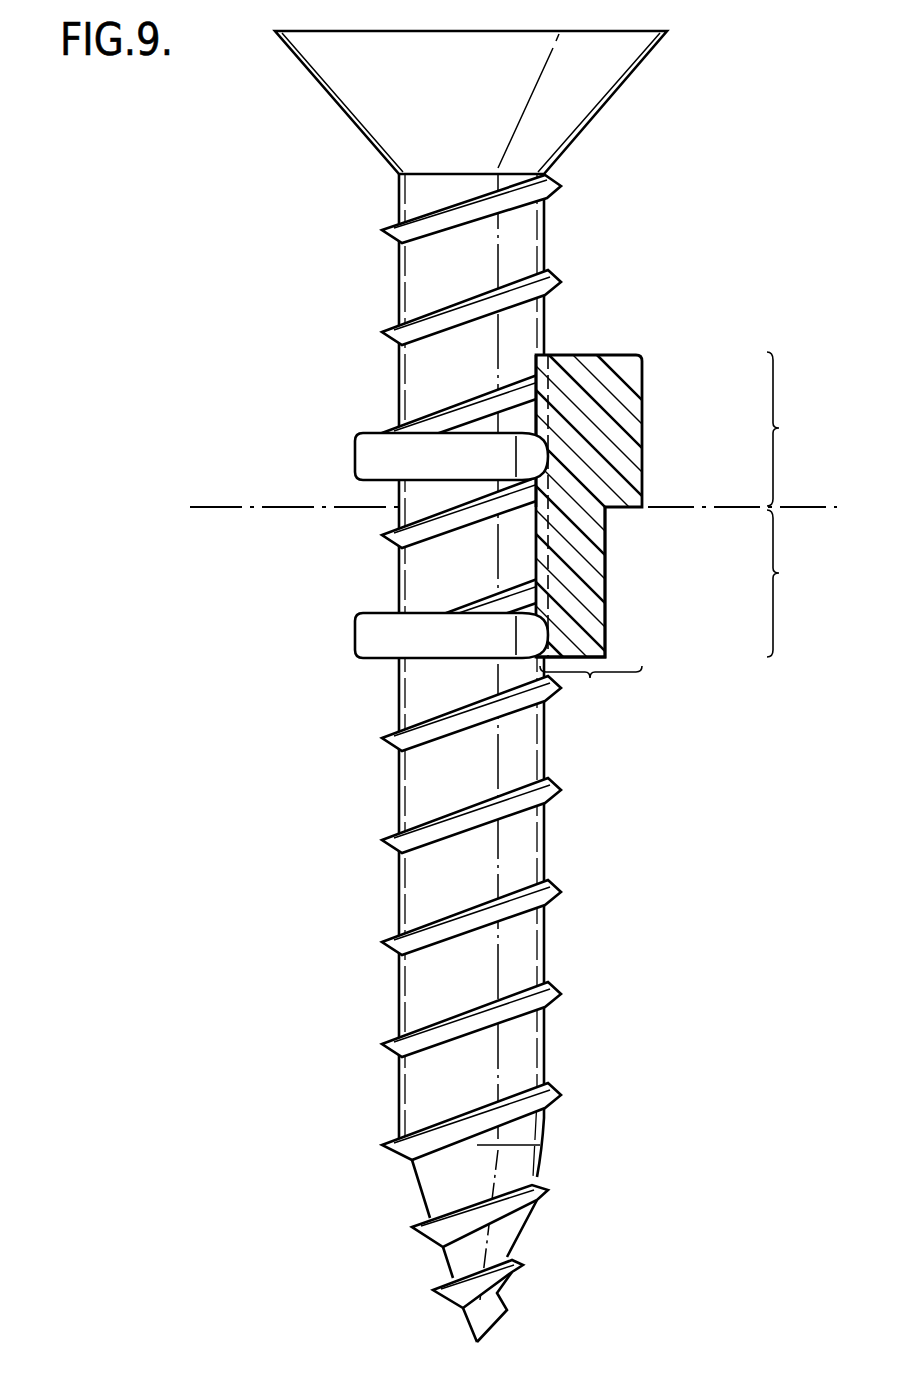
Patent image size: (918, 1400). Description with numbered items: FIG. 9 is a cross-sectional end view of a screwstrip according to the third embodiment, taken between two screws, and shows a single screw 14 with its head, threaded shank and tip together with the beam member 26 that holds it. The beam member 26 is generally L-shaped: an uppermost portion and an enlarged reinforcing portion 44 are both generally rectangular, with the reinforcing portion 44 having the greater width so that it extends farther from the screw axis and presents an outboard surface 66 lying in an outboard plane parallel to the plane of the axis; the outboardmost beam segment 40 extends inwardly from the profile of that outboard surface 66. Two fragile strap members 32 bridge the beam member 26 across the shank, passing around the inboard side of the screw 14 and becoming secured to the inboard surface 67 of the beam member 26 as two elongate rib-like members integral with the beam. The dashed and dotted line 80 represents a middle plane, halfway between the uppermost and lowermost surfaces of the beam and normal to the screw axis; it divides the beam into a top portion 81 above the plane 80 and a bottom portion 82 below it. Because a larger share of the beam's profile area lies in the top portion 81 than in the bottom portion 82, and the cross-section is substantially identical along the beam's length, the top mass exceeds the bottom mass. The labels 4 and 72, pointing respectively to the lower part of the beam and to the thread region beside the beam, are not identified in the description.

The screw 14 is at (597, 193).
The threaded portion 4 is at (606, 590).
The beam member 26 is at (654, 496).
The strap members 32 is at (356, 443).
The outboardmost beam segment 40 is at (591, 694).
The enlarged reinforcing central portion 44 is at (613, 407).
The outboard surface 66 is at (606, 540).
The inboard surface 67 is at (543, 513).
The thread flank 72 is at (543, 548).
The middle plane 80 is at (228, 507).
The top portion 81 is at (791, 429).
The bottom portion 82 is at (792, 583).